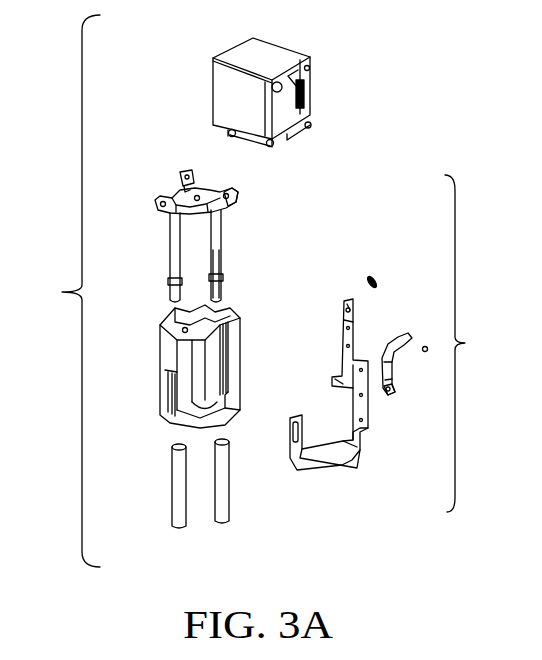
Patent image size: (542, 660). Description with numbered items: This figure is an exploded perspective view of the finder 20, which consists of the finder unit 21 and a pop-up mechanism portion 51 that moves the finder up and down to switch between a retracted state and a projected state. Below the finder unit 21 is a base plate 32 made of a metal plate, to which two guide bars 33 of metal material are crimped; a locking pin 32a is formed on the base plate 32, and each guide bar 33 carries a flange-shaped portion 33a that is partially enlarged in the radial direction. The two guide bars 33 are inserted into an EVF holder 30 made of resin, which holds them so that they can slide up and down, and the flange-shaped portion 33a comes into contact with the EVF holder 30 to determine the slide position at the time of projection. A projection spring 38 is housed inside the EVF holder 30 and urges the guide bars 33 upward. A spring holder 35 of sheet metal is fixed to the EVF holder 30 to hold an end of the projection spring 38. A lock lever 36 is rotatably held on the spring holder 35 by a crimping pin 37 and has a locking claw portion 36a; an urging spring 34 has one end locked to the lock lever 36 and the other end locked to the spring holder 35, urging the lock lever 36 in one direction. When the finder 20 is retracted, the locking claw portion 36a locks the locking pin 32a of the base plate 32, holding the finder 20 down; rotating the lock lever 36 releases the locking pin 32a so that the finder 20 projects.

The finder 20 is at (66, 291).
The finder unit 21 is at (213, 59).
The EVF holder 30 is at (163, 357).
The base plate 32 is at (180, 173).
The locking pin 32a is at (230, 211).
The guide bar 33 is at (212, 297).
The flange-shaped portion 33a is at (215, 275).
The urging spring 34 is at (378, 277).
The spring holder 35 is at (362, 430).
The lock lever 36 is at (405, 336).
The locking claw portion 36a is at (395, 392).
The crimping pin 37 is at (425, 352).
The projection spring 38 is at (223, 483).
The pop-up mechanism portion 51 is at (469, 343).